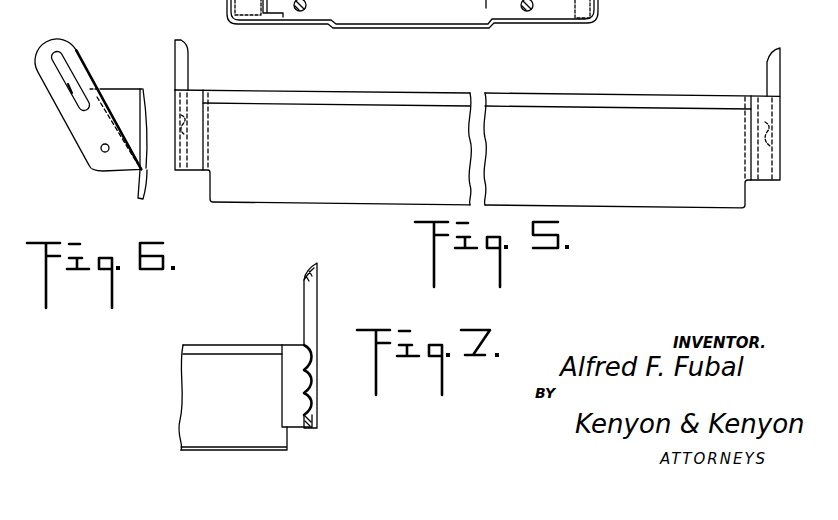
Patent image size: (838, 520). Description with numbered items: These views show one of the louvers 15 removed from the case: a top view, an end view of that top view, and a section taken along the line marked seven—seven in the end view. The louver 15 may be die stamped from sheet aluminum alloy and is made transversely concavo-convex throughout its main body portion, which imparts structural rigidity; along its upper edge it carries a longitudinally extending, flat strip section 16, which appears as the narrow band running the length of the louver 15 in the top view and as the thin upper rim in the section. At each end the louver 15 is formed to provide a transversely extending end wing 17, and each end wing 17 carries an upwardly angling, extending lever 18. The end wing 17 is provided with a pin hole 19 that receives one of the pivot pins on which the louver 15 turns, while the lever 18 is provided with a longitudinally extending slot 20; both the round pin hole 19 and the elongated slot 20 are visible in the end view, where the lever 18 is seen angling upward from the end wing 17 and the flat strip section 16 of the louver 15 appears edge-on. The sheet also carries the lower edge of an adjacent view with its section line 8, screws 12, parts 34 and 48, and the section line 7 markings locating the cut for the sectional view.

In FIG. 6, the section line 7- 7 is at (28, 0).
In FIG. 5, the section line 8- 8 is at (351, 33).
In FIG. 5, the screw 12 is at (300, 12).
In FIG. 5, the louver 15 is at (628, 183).
In FIG. 6, the louver 15 is at (148, 165).
In FIG. 7, the louver 15 is at (220, 368).
In FIG. 5, the flat strip section 16 is at (334, 95).
In FIG. 6, the flat strip section 16 is at (146, 93).
In FIG. 7, the flat strip section 16 is at (194, 347).
In FIG. 5, the end wing 17 is at (178, 116).
In FIG. 6, the end wing 17 is at (96, 130).
In FIG. 7, the end wing 17 is at (318, 336).
In FIG. 5, the lever 18 is at (178, 40).
In FIG. 6, the lever 18 is at (80, 66).
In FIG. 7, the lever 18 is at (316, 266).
In FIG. 6, the pin hole 19 is at (101, 147).
In FIG. 7, the pin hole 19 is at (318, 392).
In FIG. 6, the slot 20 is at (72, 93).
In FIG. 7, the slot 20 is at (310, 301).
In FIG. 5, the housing 34 is at (490, 6).
In FIG. 5, the contact 48 is at (372, 9).